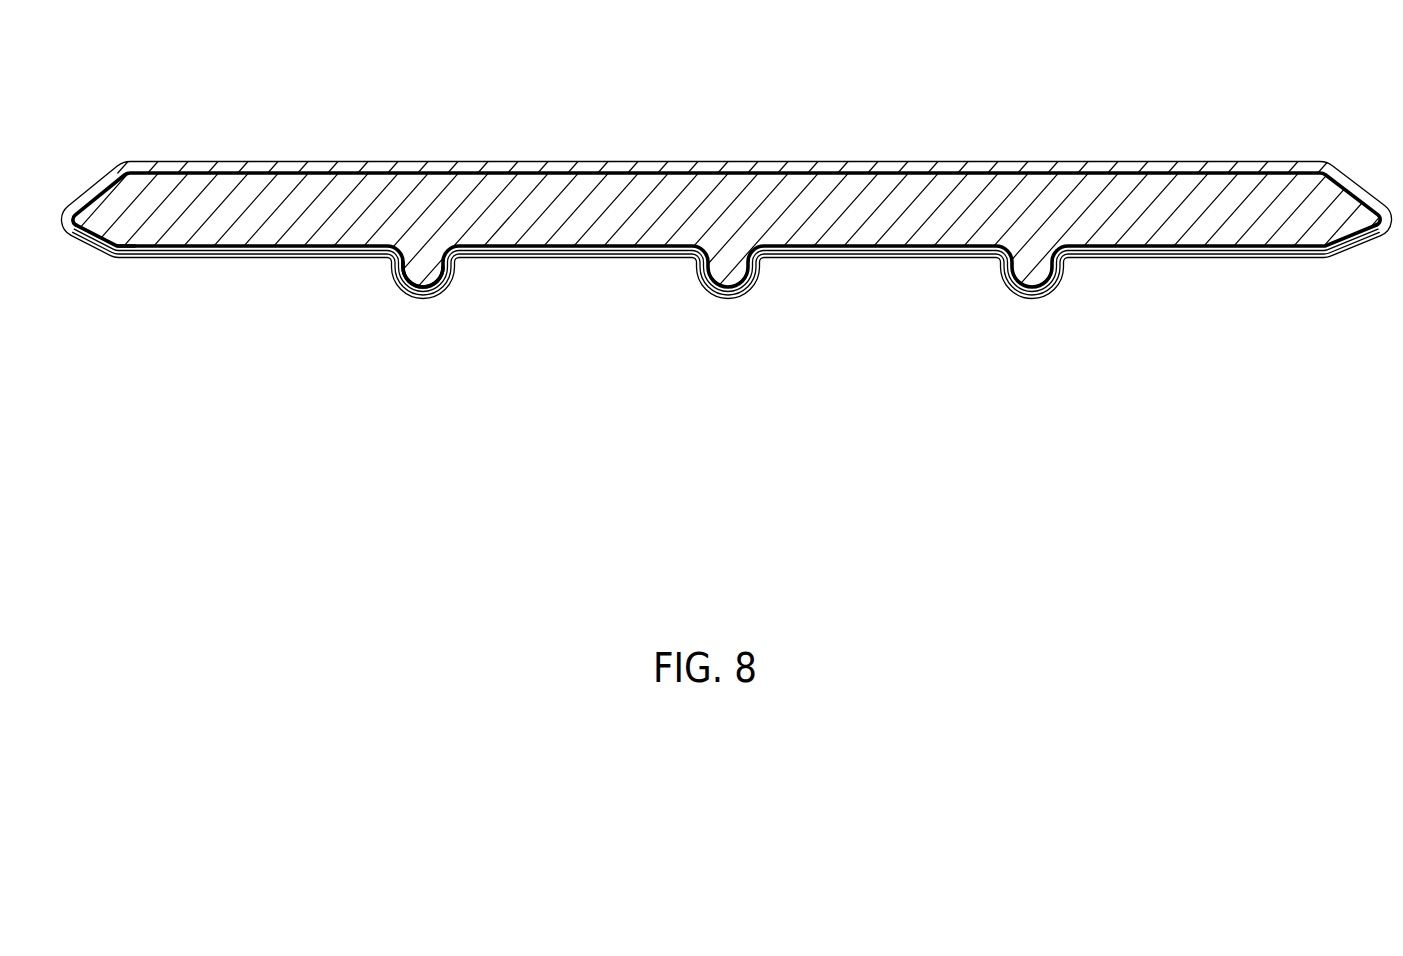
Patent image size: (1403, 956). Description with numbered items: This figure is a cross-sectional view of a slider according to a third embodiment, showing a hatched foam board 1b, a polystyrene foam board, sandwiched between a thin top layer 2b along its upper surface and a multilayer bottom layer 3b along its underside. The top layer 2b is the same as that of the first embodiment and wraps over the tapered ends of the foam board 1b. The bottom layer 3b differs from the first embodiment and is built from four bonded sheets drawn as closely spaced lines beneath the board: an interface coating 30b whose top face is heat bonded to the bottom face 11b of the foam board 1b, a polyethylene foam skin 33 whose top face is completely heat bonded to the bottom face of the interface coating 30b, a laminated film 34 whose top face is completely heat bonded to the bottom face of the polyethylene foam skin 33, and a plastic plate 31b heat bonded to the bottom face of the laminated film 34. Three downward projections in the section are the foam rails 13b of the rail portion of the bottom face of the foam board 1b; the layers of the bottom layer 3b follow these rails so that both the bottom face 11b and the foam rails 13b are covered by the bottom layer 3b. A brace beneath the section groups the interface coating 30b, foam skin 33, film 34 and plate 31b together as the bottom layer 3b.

The foam board 1b is at (577, 178).
The top layer 2b is at (1040, 163).
The bottom layer 3b is at (726, 347).
The interface coating 30b is at (798, 257).
The polyethylene foam skin 33 is at (848, 257).
The laminated film 34 is at (905, 257).
The plastic plate 31b is at (800, 383).
The bottom face 11b is at (262, 247).
The foam rails 13b is at (412, 275).